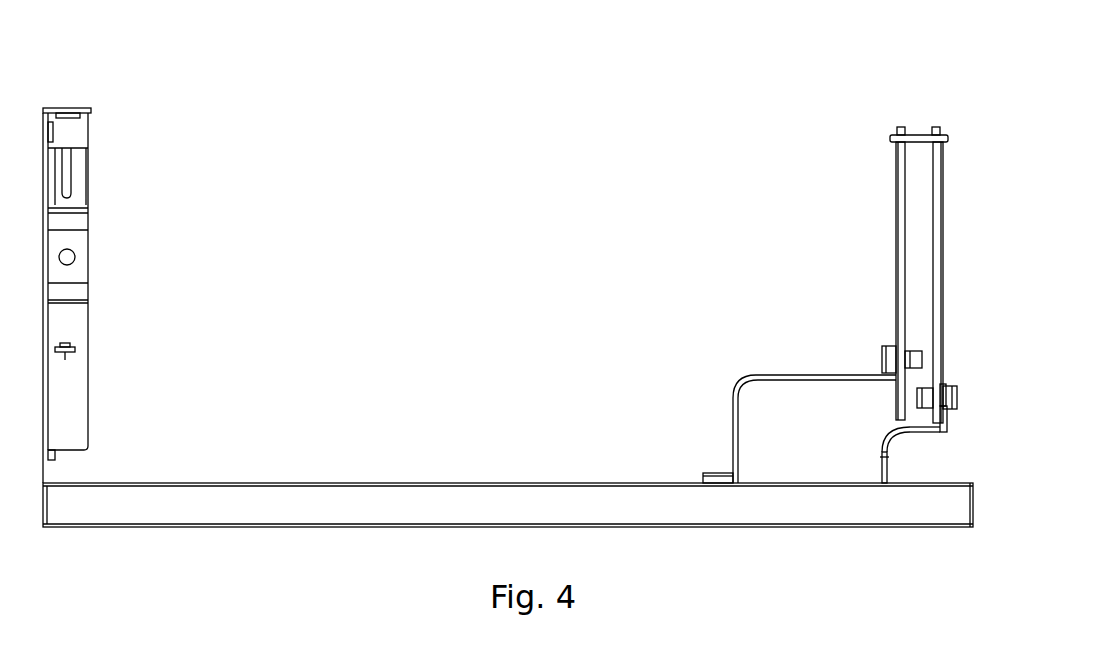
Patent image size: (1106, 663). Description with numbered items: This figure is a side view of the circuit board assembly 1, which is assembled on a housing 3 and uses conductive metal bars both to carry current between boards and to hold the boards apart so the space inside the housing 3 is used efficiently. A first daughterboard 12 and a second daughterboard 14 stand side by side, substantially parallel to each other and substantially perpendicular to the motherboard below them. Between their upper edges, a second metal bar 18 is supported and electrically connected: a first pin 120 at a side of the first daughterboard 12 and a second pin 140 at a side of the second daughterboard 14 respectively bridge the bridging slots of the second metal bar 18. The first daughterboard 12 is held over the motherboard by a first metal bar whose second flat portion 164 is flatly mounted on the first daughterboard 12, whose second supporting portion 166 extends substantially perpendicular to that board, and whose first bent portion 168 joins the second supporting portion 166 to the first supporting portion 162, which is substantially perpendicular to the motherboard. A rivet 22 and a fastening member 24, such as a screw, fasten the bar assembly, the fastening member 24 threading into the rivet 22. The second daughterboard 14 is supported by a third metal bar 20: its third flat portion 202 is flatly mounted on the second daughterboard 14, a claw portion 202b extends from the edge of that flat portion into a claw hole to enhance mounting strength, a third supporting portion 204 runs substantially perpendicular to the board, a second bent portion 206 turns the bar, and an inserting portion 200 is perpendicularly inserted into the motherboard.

The circuit board assembly 1 is at (458, 77).
The housing 3 is at (66, 104).
The first daughterboard 12 is at (893, 182).
The second daughterboard 14 is at (947, 182).
The second metal bar 18 is at (920, 136).
The first pin 120 is at (897, 125).
The second pin 140 is at (936, 125).
The first supporting portion 162 is at (732, 438).
The second flat portion 164 is at (893, 340).
The second supporting portion 166 is at (820, 373).
The first bent portion 168 is at (742, 384).
The rivet 22 is at (925, 392).
The fastening member 24 is at (957, 400).
The claw portion 202b is at (945, 385).
The third metal bar 20 is at (983, 441).
The third flat portion 202 is at (946, 425).
The third supporting portion 204 is at (935, 436).
The second bent portion 206 is at (920, 452).
The inserting portion 200 is at (958, 470).